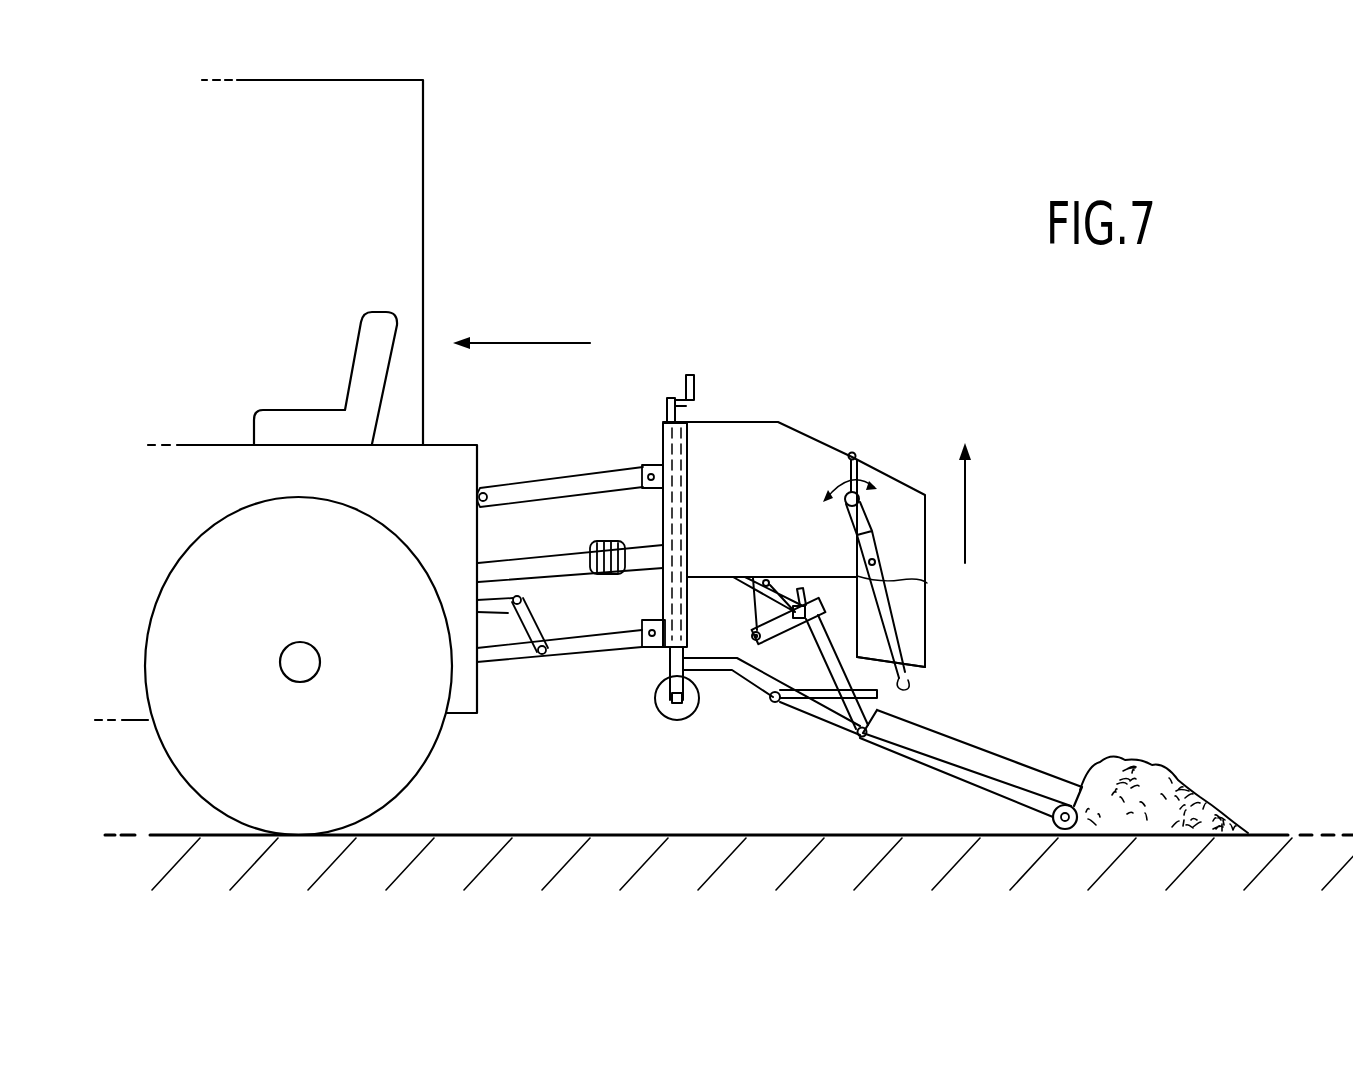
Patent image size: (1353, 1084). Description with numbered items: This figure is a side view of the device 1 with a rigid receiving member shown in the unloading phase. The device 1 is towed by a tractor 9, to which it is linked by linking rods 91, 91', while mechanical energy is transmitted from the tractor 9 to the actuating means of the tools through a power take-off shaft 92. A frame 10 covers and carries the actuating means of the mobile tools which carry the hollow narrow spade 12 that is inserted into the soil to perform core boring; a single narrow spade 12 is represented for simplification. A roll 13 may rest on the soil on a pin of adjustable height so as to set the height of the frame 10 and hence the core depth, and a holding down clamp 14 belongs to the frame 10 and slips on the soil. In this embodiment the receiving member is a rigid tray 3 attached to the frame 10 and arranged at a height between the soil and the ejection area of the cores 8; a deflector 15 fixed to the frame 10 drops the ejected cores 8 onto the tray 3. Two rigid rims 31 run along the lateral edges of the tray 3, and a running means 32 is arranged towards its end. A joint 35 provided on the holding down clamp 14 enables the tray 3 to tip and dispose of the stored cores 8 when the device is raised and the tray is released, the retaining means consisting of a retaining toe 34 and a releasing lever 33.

The tractor 9 is at (441, 203).
The device 1 is at (814, 404).
The frame 10 is at (737, 445).
The linking rod 91 is at (570, 465).
The power take-off shaft 92 is at (535, 567).
The linking rod 91' is at (571, 658).
The releasing lever 33 is at (925, 589).
The deflector 15 is at (910, 625).
The hollow narrow spade 12 is at (817, 655).
The roll 13 is at (672, 715).
The holding down clamp 14 is at (732, 675).
The joint 35 is at (773, 702).
The retaining toe 34 is at (864, 740).
The rigid rim 31 is at (990, 757).
The rigid tray 3 is at (958, 770).
The running means 32 is at (1052, 837).
The core 8 is at (1163, 787).